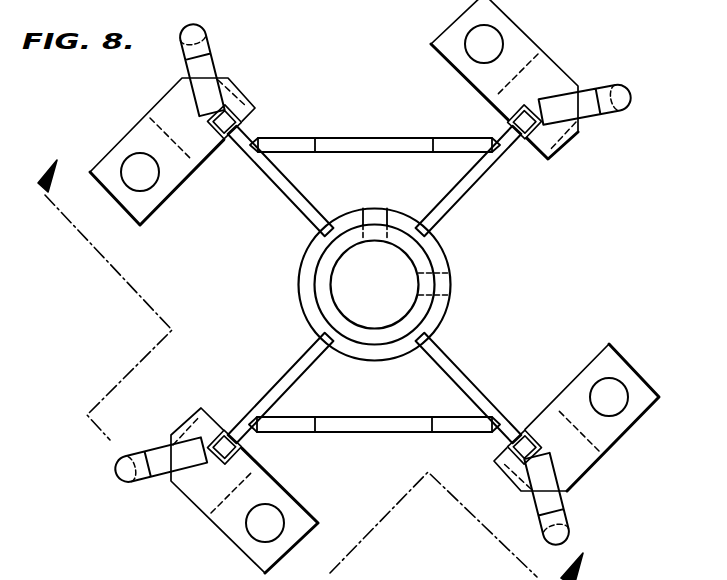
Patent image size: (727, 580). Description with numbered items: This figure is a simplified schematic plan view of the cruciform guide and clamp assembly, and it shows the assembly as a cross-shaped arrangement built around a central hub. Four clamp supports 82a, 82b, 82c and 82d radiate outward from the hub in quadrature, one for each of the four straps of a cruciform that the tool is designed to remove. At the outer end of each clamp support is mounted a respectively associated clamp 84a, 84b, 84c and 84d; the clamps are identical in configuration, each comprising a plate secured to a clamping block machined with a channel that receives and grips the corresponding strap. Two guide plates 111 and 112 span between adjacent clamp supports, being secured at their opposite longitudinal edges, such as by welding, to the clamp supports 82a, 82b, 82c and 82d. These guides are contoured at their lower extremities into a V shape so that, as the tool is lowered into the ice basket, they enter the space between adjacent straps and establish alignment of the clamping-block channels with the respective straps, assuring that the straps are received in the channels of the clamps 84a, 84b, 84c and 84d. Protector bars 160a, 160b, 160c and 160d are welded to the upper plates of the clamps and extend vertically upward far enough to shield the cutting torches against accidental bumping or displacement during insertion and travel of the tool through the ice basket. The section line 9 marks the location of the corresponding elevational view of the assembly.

The clamp support 82a is at (295, 360).
The clamp support 82b is at (468, 366).
The clamp support 82c is at (448, 199).
The clamp support 82d is at (306, 201).
The clamp 84a is at (300, 506).
The clamp 84b is at (623, 436).
The clamp 84c is at (574, 136).
The clamp 84d is at (247, 100).
The guide plate 111 is at (441, 432).
The guide plate 112 is at (405, 138).
The protector bar 160a is at (154, 477).
The protector bar 160b is at (561, 498).
The protector bar 160c is at (602, 114).
The protector bar 160d is at (208, 40).
The section line 9— 9 is at (315, 361).